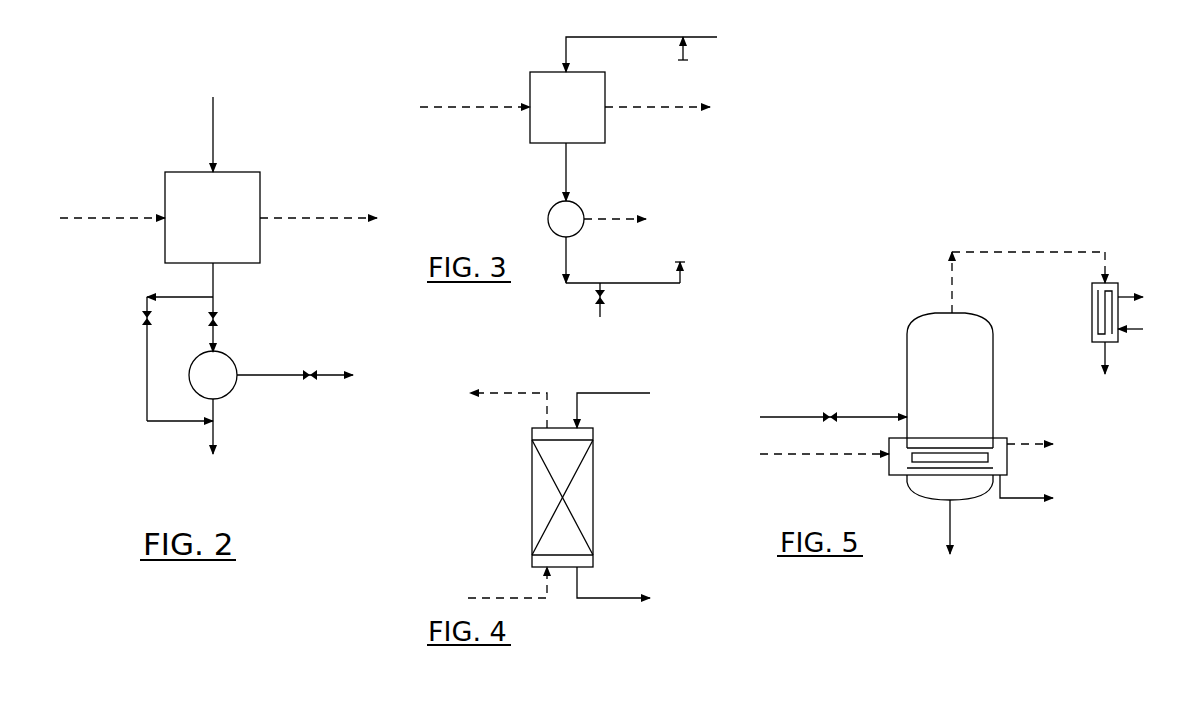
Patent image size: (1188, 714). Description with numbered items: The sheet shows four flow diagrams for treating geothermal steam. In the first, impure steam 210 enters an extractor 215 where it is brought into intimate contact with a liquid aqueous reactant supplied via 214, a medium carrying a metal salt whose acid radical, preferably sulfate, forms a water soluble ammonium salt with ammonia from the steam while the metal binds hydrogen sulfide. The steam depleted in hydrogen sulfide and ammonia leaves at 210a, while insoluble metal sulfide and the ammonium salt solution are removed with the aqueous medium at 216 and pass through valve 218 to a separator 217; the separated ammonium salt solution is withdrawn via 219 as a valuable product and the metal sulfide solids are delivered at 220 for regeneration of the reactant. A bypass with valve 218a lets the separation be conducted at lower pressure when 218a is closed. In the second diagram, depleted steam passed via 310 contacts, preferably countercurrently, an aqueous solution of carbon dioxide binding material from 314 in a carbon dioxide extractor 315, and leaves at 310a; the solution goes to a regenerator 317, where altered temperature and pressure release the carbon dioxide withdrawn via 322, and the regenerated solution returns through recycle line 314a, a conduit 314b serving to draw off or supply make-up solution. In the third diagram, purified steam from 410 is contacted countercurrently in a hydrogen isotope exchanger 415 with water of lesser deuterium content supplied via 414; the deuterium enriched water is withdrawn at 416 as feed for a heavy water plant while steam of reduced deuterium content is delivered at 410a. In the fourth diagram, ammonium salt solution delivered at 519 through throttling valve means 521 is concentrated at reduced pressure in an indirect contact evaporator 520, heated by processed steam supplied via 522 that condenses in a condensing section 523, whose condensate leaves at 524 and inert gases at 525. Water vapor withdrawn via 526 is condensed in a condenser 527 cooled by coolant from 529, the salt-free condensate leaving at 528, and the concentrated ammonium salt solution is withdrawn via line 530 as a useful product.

In FIG. 2, the steam 210 is at (112, 217).
In FIG. 2, the steam outlet 210a is at (300, 218).
In FIG. 2, the liquid aqueous reactant supply 214 is at (221, 126).
In FIG. 2, the extractor 215 is at (262, 173).
In FIG. 2, the aqueous medium outlet 216 is at (216, 280).
In FIG. 2, the separator 217 is at (231, 358).
In FIG. 2, the valve 218 is at (220, 319).
In FIG. 2, the valve 218a is at (143, 318).
In FIG. 2, the ammonium salt solution withdrawal line 219 is at (253, 377).
In FIG. 2, the metal sulfide solids outlet 220 is at (215, 432).
In FIG. 3, the steam inlet 310 is at (492, 107).
In FIG. 3, the steam outlet 310a is at (650, 108).
In FIG. 3, the carbon dioxide binding solution supply 314 is at (609, 37).
In FIG. 3, the recycle line 314a is at (687, 56).
In FIG. 3, the conduit 314b is at (596, 297).
In FIG. 3, the carbon dioxide extractor 315 is at (530, 128).
In FIG. 3, the regenerator 317 is at (549, 212).
In FIG. 3, the carbon dioxide withdrawal line 322 is at (602, 219).
In FIG. 4, the purified geothermal steam supply 410 is at (516, 598).
In FIG. 4, the steam delivery outlet 410a is at (537, 391).
In FIG. 4, the water supply line 414 is at (605, 393).
In FIG. 4, the hydrogen isotope exchanger 415 is at (595, 478).
In FIG. 4, the water withdrawal line 416 is at (598, 598).
In FIG. 5, the ammonium salt solution delivery 519 is at (810, 415).
In FIG. 5, the indirect contact evaporator 520 is at (907, 357).
In FIG. 5, the throttling valve means 521 is at (834, 410).
In FIG. 5, the heating fluid supply 522 is at (843, 455).
In FIG. 5, the condensing section 523 is at (903, 474).
In FIG. 5, the condensate outlet 524 is at (1016, 498).
In FIG. 5, the inert gas outlet 525 is at (1023, 444).
In FIG. 5, the water vapor line 526 is at (952, 281).
In FIG. 5, the condenser 527 is at (1092, 303).
In FIG. 5, the condensate withdrawal line 528 is at (1105, 356).
In FIG. 5, the coolant supply 529 is at (1126, 330).
In FIG. 5, the concentrated solution line 530 is at (952, 534).